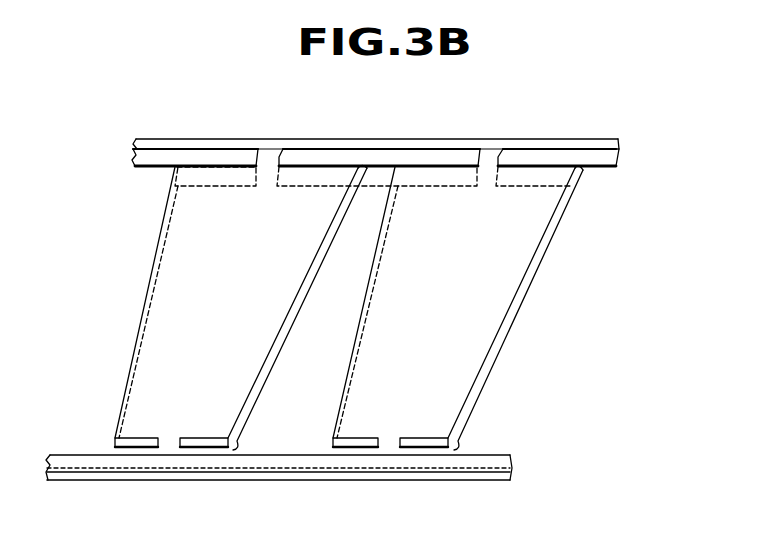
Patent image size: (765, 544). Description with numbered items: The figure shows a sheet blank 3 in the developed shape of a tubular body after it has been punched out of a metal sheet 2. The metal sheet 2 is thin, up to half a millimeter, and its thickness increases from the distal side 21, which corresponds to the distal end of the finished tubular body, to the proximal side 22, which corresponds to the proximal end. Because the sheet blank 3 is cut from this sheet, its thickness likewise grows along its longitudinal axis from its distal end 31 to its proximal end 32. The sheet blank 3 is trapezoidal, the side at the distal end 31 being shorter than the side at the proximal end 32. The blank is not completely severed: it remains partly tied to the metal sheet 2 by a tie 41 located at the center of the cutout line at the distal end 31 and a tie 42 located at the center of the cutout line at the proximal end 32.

The metal sheet 2 is at (612, 138).
The proximal side 22 is at (620, 150).
The sheet blank 3 is at (313, 182).
The proximal end 32 is at (373, 166).
The tie 42 is at (268, 167).
The tie 41 is at (170, 440).
The distal end 31 is at (238, 450).
The distal side 21 is at (502, 469).